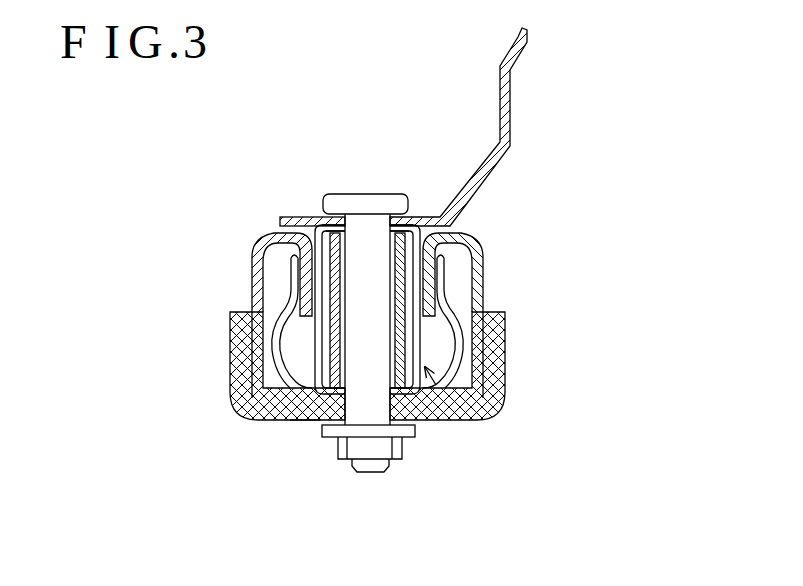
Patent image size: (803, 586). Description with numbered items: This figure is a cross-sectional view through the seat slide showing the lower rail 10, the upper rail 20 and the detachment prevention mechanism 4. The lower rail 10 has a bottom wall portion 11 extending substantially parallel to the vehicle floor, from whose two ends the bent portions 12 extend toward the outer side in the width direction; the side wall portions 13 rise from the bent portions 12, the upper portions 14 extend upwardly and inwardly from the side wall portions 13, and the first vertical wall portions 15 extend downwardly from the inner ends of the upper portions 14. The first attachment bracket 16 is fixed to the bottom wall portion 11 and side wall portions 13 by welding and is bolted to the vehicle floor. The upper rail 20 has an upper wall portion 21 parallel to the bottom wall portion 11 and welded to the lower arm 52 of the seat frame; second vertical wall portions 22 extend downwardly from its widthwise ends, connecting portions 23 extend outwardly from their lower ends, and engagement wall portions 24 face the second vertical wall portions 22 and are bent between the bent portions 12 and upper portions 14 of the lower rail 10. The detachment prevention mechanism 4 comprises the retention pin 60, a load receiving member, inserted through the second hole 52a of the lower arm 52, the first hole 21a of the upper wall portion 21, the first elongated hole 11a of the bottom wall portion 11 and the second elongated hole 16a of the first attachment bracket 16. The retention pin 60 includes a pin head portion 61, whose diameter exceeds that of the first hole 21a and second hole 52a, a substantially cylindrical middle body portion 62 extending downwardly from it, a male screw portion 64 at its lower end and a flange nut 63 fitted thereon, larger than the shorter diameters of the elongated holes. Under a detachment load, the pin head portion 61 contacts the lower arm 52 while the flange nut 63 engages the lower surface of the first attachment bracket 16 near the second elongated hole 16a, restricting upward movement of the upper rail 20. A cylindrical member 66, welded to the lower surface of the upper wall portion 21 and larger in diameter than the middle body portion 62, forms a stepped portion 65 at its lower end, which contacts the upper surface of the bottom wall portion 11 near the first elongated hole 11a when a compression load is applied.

The detachment prevention mechanism 4 is at (650, 262).
The lower rail 10 is at (507, 262).
The bottom wall portion 11 is at (277, 403).
The first elongated hole 11a is at (297, 421).
The bent portion 12 is at (280, 358).
The side wall portion 13 is at (251, 270).
The upper portion 14 is at (255, 252).
The first vertical wall portion 15 is at (260, 253).
The first attachment bracket 16 is at (225, 383).
The second elongated hole 16a is at (316, 414).
The upper rail 20 is at (452, 410).
The upper wall portion 21 is at (332, 216).
The first hole 21a is at (420, 217).
The second vertical wall portion 22 is at (288, 324).
The connecting portion 23 is at (237, 402).
The engagement wall portion 24 is at (285, 292).
The lower arm 52 is at (510, 100).
The second hole 52a is at (323, 207).
The retention pin 60 is at (325, 183).
The pin head portion 61 is at (365, 194).
The middle body portion 62 is at (415, 434).
The flange nut 63 is at (337, 447).
The male screw portion 64 is at (370, 473).
The stepped portion 65 is at (402, 400).
The cylindrical member 66 is at (436, 385).